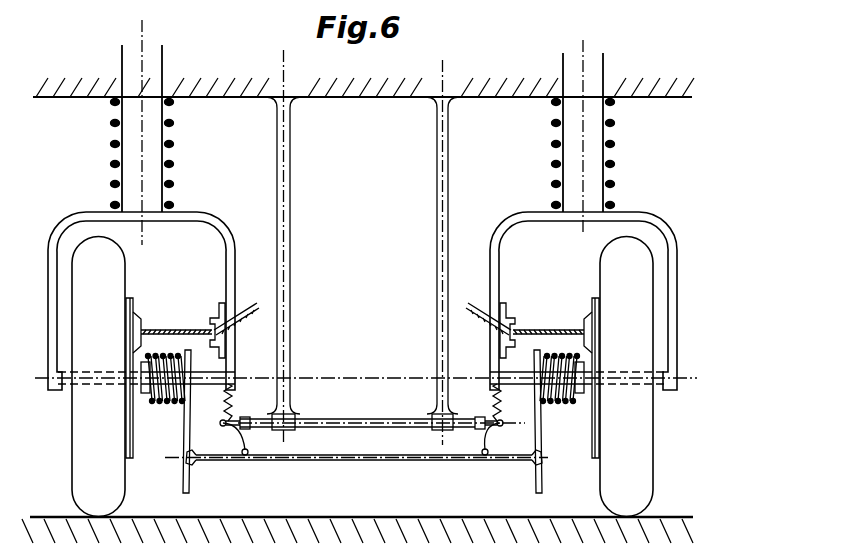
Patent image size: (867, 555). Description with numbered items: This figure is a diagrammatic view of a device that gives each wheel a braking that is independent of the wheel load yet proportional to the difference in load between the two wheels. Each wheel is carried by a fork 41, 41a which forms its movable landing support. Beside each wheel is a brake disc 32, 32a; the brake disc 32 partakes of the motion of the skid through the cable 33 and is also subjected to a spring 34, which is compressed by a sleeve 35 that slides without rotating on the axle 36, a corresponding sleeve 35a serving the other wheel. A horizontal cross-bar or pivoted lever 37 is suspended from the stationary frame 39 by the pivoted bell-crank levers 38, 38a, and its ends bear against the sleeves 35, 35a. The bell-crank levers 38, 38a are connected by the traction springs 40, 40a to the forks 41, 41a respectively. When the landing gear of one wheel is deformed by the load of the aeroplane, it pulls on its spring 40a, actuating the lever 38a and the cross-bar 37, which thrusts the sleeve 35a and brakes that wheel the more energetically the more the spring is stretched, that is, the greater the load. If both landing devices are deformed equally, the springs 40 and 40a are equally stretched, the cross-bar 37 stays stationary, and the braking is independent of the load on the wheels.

The fork 41 is at (212, 226).
The fork 41a is at (510, 228).
The brake disc 32 is at (133, 317).
The brake disc 32a is at (584, 322).
The cable 33 is at (251, 301).
The spring 34 is at (165, 406).
The sleeve 35 is at (190, 414).
The sleeve 35a is at (549, 436).
The axle 36 is at (226, 378).
The horizontal cross-bar 37 is at (314, 468).
The pivoted lever 38 is at (255, 441).
The pivoted lever 38a is at (479, 437).
The stationary frame 39 is at (361, 420).
The spring 40 is at (239, 410).
The spring 40a is at (489, 406).